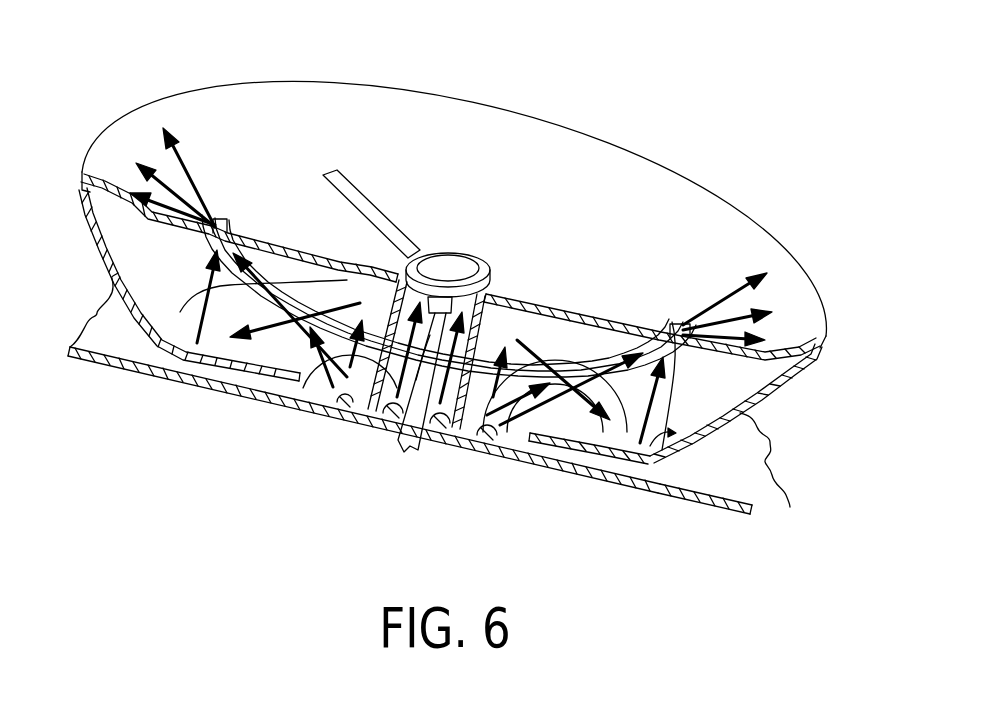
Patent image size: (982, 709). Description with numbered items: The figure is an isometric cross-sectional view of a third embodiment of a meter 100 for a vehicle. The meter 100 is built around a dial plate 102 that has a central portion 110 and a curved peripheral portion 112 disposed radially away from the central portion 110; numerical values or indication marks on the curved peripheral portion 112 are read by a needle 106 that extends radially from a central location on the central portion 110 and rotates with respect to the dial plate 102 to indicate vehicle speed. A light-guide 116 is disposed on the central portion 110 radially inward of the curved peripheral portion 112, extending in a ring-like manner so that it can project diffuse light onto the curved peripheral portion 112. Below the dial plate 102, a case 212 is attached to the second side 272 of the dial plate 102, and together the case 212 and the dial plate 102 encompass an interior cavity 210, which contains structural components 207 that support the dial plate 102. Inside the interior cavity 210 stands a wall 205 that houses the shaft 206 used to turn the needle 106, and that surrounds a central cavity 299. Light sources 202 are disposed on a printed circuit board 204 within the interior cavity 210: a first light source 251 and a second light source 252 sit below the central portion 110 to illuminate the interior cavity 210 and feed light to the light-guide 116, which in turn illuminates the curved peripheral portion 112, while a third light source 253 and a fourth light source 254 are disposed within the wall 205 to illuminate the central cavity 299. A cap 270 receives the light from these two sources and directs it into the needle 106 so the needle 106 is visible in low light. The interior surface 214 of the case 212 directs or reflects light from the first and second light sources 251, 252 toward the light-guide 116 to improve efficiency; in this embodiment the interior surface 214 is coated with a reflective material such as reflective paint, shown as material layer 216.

The meter 100 is at (459, 310).
The dial plate 102 is at (300, 82).
The needle 106 is at (380, 195).
The central portion 110 is at (560, 247).
The curved peripheral portion 112 is at (733, 227).
The light-guide 116 is at (260, 170).
The light sources 202 is at (317, 413).
The printed circuit board 204 is at (731, 500).
The wall 205 is at (517, 422).
The shaft 206 is at (410, 437).
The structural components 207 is at (350, 280).
The interior cavity 210 is at (730, 373).
The case 212 is at (767, 427).
The interior surface 214 is at (673, 457).
The material layer 216 is at (790, 507).
The first light source 251 is at (483, 423).
The second light source 252 is at (343, 399).
The third light source 253 is at (440, 425).
The fourth light source 254 is at (382, 422).
The cap 270 is at (452, 266).
The second side 272 is at (600, 350).
The central cavity 299 is at (388, 412).